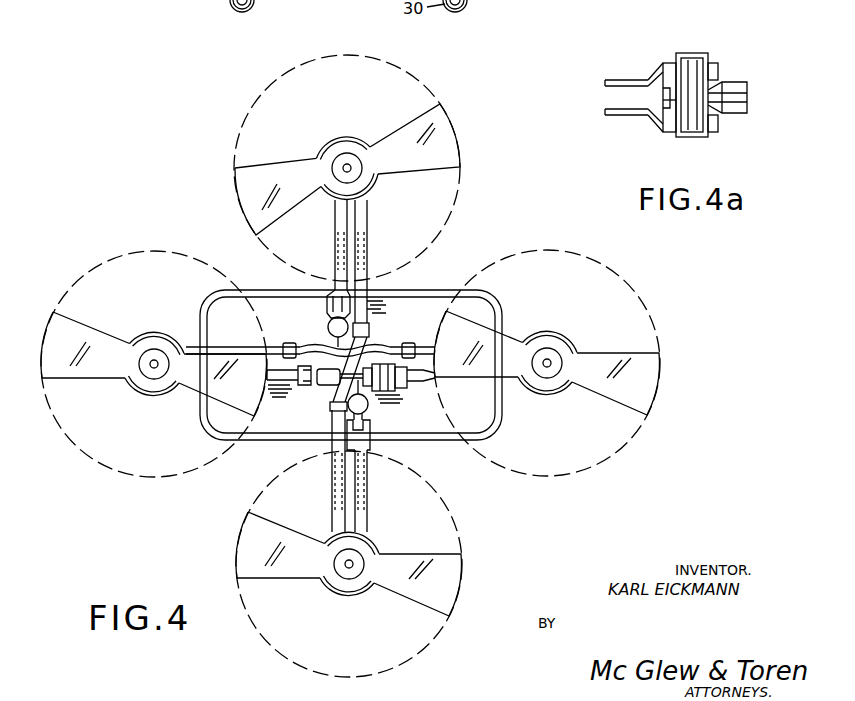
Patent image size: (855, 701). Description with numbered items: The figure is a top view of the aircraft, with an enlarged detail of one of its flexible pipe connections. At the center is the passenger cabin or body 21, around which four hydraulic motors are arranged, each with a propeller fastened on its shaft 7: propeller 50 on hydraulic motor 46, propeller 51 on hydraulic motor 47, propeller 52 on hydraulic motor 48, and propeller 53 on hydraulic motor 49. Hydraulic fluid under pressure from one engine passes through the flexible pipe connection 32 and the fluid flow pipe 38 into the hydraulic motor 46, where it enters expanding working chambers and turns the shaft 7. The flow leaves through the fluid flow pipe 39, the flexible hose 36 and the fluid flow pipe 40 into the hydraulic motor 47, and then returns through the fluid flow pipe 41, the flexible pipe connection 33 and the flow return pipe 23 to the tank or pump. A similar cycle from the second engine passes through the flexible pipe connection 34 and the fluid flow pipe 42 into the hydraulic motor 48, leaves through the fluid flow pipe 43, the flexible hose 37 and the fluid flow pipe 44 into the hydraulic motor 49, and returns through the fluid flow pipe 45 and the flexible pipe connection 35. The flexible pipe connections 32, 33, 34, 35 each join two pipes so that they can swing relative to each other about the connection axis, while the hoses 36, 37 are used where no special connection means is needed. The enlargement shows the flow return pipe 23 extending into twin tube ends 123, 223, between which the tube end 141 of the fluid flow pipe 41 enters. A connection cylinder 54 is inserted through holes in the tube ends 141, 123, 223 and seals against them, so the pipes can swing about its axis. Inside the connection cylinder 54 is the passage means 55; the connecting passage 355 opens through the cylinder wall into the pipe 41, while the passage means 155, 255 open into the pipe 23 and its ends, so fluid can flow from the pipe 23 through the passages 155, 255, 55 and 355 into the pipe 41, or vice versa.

In FIG. 4, the shaft 7 is at (349, 164).
In FIG. 4, the passenger cabin or body of the aircraft 21 is at (272, 300).
In FIG. 4, the flexible pipe connection 32 is at (310, 386).
In FIG. 4, the flexible pipe connection 33 is at (419, 395).
In FIG. 4a, the flexible pipe connection 33 is at (734, 40).
In FIG. 4, the flexible pipe connection 34 is at (328, 326).
In FIG. 4, the flexible pipe connection 35 is at (370, 415).
In FIG. 4, the flexible tube or hose 36 is at (378, 346).
In FIG. 4, the flexible tube or hose 37 is at (341, 392).
In FIG. 4, the fluid flow pipe or tube 38 is at (278, 393).
In FIG. 4, the fluid flow pipe or tube 39 is at (288, 348).
In FIG. 4, the fluid flow pipe or tube 40 is at (413, 345).
In FIG. 4, the fluid flow pipe or tube 41 is at (428, 378).
In FIG. 4a, the fluid flow pipe or tube 41 is at (745, 107).
In FIG. 4, the fluid flow pipe or tube 42 is at (337, 244).
In FIG. 4, the fluid flow pipe or tube 43 is at (365, 244).
In FIG. 4, the fluid flow pipe or tube 44 is at (334, 487).
In FIG. 4, the fluid flow pipe or tube 45 is at (366, 487).
In FIG. 4, the hydraulic motor 46 is at (156, 336).
In FIG. 4, the hydraulic motor 47 is at (556, 393).
In FIG. 4, the hydraulic motor 48 is at (374, 188).
In FIG. 4, the hydraulic motor 49 is at (357, 594).
In FIG. 4, the propeller 50 is at (91, 372).
In FIG. 4, the propeller 51 is at (633, 357).
In FIG. 4, the propeller 52 is at (292, 168).
In FIG. 4, the propeller 53 is at (271, 570).
In FIG. 4a, the flow return pipe or tube 23 is at (617, 88).
In FIG. 4a, the passage means 255 is at (667, 68).
In FIG. 4a, the pipe or tube end 141 is at (658, 112).
In FIG. 4a, the passage means 155 is at (668, 127).
In FIG. 4a, the connection cylinder 54 is at (685, 137).
In FIG. 4a, the passage means 55 is at (704, 122).
In FIG. 4a, the twin flow pipe or tube end 123 is at (718, 68).
In FIG. 4a, the twin flow pipe or tube end 223 is at (718, 124).
In FIG. 4a, the connecting passage 355 is at (738, 92).